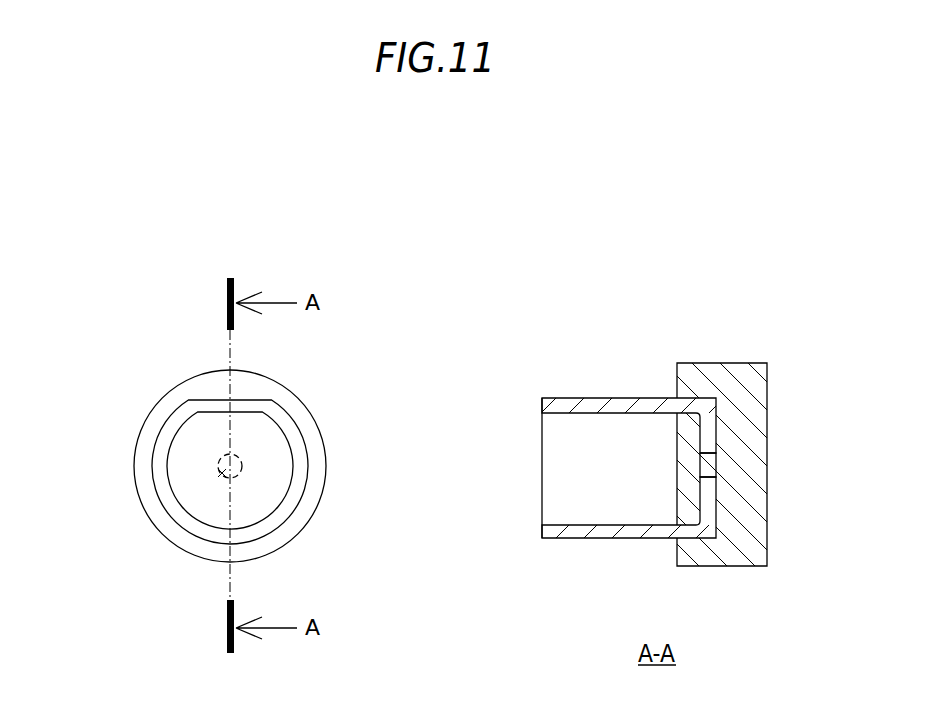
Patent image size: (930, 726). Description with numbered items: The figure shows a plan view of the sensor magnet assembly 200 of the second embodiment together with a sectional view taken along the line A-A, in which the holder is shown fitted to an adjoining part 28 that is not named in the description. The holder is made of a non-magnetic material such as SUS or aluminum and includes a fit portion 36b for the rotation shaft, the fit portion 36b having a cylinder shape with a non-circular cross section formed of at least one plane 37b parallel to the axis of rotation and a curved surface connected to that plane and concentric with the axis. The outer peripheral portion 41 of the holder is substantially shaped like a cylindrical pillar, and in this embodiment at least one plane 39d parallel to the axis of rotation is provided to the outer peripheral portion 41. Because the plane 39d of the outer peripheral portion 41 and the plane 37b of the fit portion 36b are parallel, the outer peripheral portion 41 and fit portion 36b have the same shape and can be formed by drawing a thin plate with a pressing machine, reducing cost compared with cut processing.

The housing block 28 is at (723, 378).
The fit portion 36b is at (285, 483).
The plane 37b is at (210, 424).
The plane 39d is at (252, 400).
The outer peripheral portion 41 is at (173, 417).
The sensor magnet assembly 200 is at (449, 708).